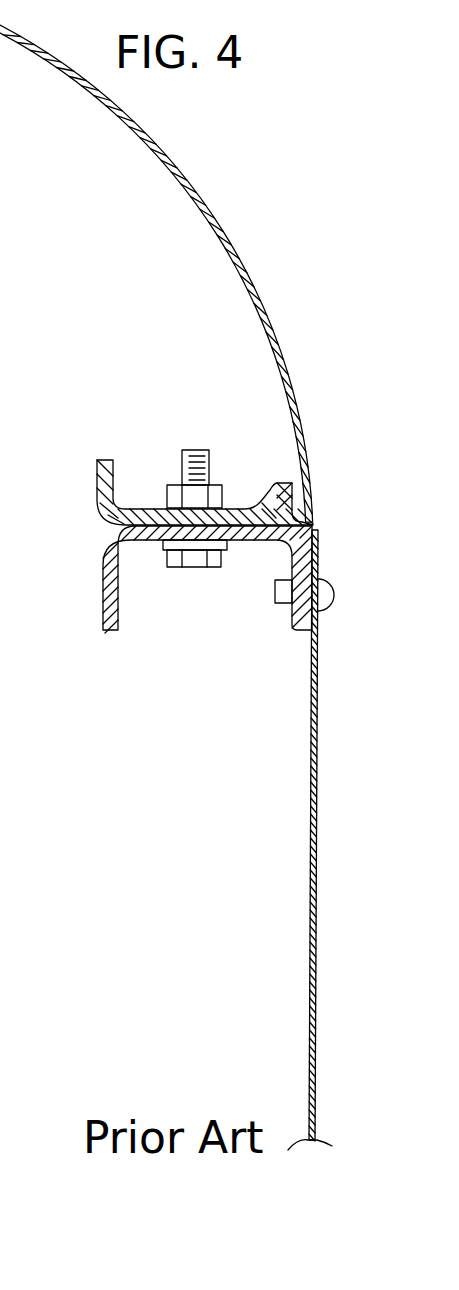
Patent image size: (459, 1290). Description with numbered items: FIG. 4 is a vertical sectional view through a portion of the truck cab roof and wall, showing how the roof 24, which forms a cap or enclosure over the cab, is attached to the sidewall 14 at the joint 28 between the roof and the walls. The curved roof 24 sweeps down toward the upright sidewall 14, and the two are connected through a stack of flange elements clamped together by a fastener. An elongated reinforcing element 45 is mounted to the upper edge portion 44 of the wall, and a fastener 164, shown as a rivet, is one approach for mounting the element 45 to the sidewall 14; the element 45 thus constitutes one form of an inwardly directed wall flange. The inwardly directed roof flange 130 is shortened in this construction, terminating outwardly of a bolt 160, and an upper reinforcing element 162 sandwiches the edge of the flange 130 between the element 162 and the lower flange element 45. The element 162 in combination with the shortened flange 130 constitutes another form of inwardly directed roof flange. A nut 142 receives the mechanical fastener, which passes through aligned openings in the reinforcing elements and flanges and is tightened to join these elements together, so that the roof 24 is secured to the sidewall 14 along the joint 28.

The first sidewall 14 is at (317, 737).
The roof 24 is at (248, 236).
The joint 28 is at (330, 516).
The upper edge portion of back wall 44 is at (318, 531).
The elongated reinforcing element 45 is at (138, 541).
The roof flange 130 is at (292, 487).
The nut 142 is at (168, 484).
The bolt 160 is at (197, 568).
The upper reinforcing element 162 is at (97, 470).
The fastener 164 is at (334, 595).